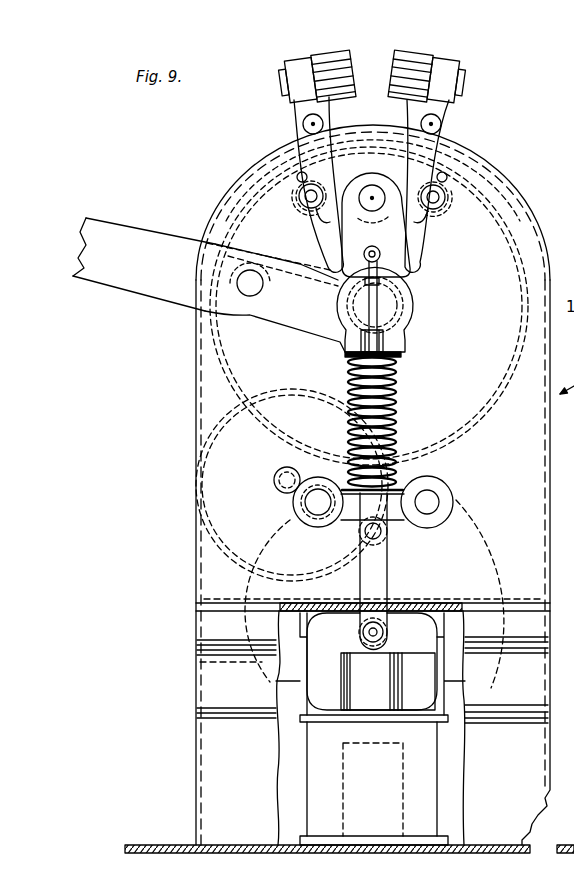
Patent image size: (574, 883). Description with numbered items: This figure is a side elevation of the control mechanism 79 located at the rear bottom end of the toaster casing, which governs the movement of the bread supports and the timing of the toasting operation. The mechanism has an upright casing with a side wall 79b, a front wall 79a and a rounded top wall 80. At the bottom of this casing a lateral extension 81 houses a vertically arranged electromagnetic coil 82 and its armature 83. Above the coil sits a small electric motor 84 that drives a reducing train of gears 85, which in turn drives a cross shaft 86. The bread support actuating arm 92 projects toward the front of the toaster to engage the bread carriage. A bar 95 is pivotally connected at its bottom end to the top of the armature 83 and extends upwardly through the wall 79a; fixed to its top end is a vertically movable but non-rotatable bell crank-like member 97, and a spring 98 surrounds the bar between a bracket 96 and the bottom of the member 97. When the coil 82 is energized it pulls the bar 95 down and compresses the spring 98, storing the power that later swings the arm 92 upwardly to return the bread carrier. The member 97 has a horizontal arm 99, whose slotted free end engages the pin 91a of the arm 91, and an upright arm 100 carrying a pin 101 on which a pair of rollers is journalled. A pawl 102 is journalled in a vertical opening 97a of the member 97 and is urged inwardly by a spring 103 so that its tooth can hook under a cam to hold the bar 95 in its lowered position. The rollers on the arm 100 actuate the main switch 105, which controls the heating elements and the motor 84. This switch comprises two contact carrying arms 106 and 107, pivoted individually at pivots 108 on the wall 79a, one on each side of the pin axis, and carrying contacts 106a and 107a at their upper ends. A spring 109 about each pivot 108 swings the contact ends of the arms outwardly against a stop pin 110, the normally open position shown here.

The mechanism 79 is at (533, 422).
The front wall 79a is at (548, 473).
The side wall 79b is at (197, 426).
The rounded top wall 80 is at (458, 153).
The lateral extension 81 is at (223, 622).
The electromagnetic coil 82 is at (423, 753).
The armature 83 is at (376, 688).
The electric motor 84 is at (477, 541).
The reducing train of gears 85 is at (228, 543).
The cross shaft 86 is at (428, 478).
The arm 91 is at (275, 296).
The pin 91a is at (246, 292).
The bread support actuating arm 92 is at (174, 217).
The bar 95 is at (388, 560).
The bracket 96 is at (414, 500).
The bell crank-like member 97 is at (415, 319).
The vertical opening 97a is at (380, 283).
The spring 98 is at (397, 418).
The horizontal arm 99 is at (281, 312).
The upright arm 100 is at (388, 232).
The pin 101 is at (373, 196).
The pawl 102 is at (378, 300).
The spring 103 is at (380, 255).
The main switch 105 is at (400, 33).
The contact carrying arm 106 is at (299, 115).
The contact 106a is at (358, 44).
The contact carrying arm 107 is at (452, 116).
The contact 107a is at (417, 48).
The pivot 108 is at (311, 197).
The spring 109 is at (297, 191).
The stop pin 110 is at (300, 176).